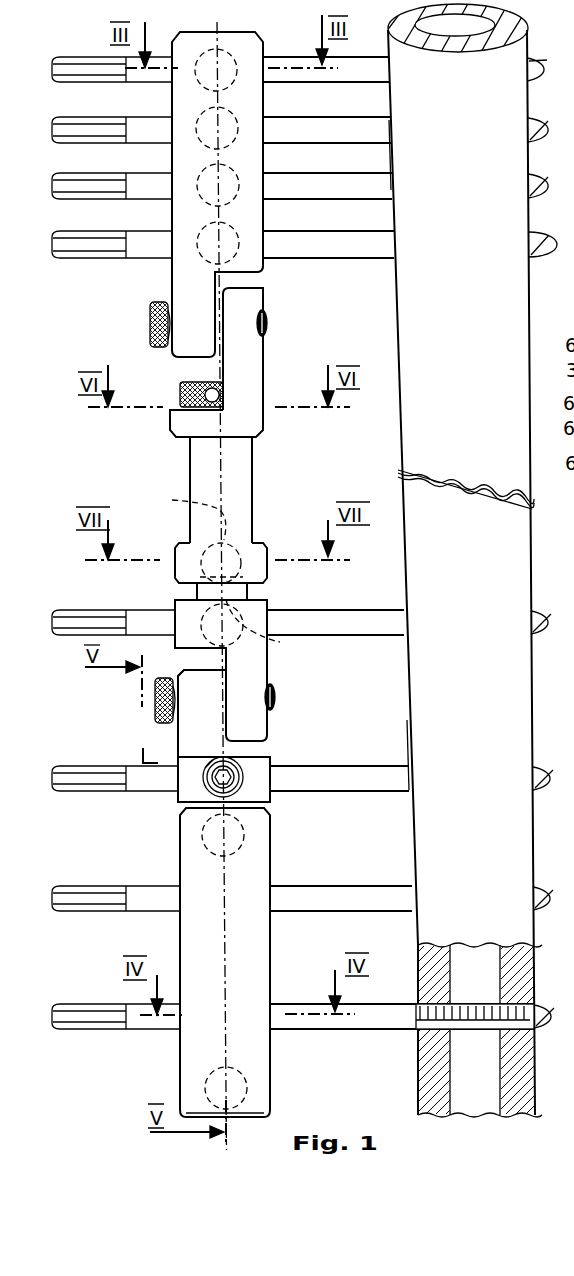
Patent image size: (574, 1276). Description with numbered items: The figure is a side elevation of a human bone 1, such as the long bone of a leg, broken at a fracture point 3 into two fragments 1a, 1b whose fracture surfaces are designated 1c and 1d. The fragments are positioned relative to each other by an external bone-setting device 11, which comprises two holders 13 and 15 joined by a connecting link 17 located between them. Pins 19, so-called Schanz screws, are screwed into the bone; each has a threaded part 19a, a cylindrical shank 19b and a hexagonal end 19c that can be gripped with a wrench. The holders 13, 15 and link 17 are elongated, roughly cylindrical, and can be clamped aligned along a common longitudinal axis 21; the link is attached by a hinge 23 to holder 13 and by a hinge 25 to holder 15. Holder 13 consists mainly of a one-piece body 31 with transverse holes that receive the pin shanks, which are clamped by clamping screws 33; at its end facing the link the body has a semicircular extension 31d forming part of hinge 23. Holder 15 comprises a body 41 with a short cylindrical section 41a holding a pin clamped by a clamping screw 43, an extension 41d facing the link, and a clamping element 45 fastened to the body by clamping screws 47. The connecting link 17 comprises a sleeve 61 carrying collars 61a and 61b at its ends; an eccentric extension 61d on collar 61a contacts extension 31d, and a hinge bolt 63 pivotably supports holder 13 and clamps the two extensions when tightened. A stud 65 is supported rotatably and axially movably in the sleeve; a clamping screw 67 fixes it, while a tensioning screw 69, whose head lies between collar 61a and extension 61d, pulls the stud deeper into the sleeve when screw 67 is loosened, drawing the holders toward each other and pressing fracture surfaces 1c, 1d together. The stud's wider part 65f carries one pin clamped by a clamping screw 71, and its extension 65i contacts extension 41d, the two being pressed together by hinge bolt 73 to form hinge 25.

The human bone 1 is at (404, 688).
The bone fragment 1a is at (388, 153).
The bone fragment 1b is at (407, 742).
The fracture surface 1c is at (460, 496).
The fracture surface 1d is at (432, 485).
The fracture point 3 is at (398, 472).
The external bone-setting device 11 is at (288, 50).
The holder 13 is at (266, 274).
The holder 15 is at (284, 862).
The connecting link 17 is at (260, 470).
The pins 19 is at (358, 56).
The threaded part 19a is at (472, 1030).
The cylindrical shank 19b is at (348, 1032).
The hexagonal end 19c is at (122, 1032).
The longitudinal axis 21 is at (229, 23).
The hinge 23 is at (277, 323).
The hinge 25 is at (278, 698).
The body 31 is at (172, 222).
The extension 31d is at (170, 356).
The clamping screw 33 is at (262, 157).
The body 41 is at (178, 743).
The cylindrical section 41a is at (178, 794).
The extension 41d is at (180, 674).
The clamping screw 43 is at (244, 765).
The clamping element 45 is at (272, 945).
The clamping screws 47 is at (268, 830).
The sleeve 61 is at (190, 475).
The collar 61a is at (168, 425).
The collar 61b is at (176, 555).
The extension 61d is at (266, 359).
The hinge bolt 63 is at (152, 304).
The stud 65 is at (248, 593).
The cylindrical wider part 65f is at (197, 594).
The extension 65i is at (275, 712).
The clamping screw 67 is at (185, 513).
The tensioning screw 69 is at (181, 394).
The clamping screw 71 is at (280, 642).
The hinge bolt 73 is at (156, 716).